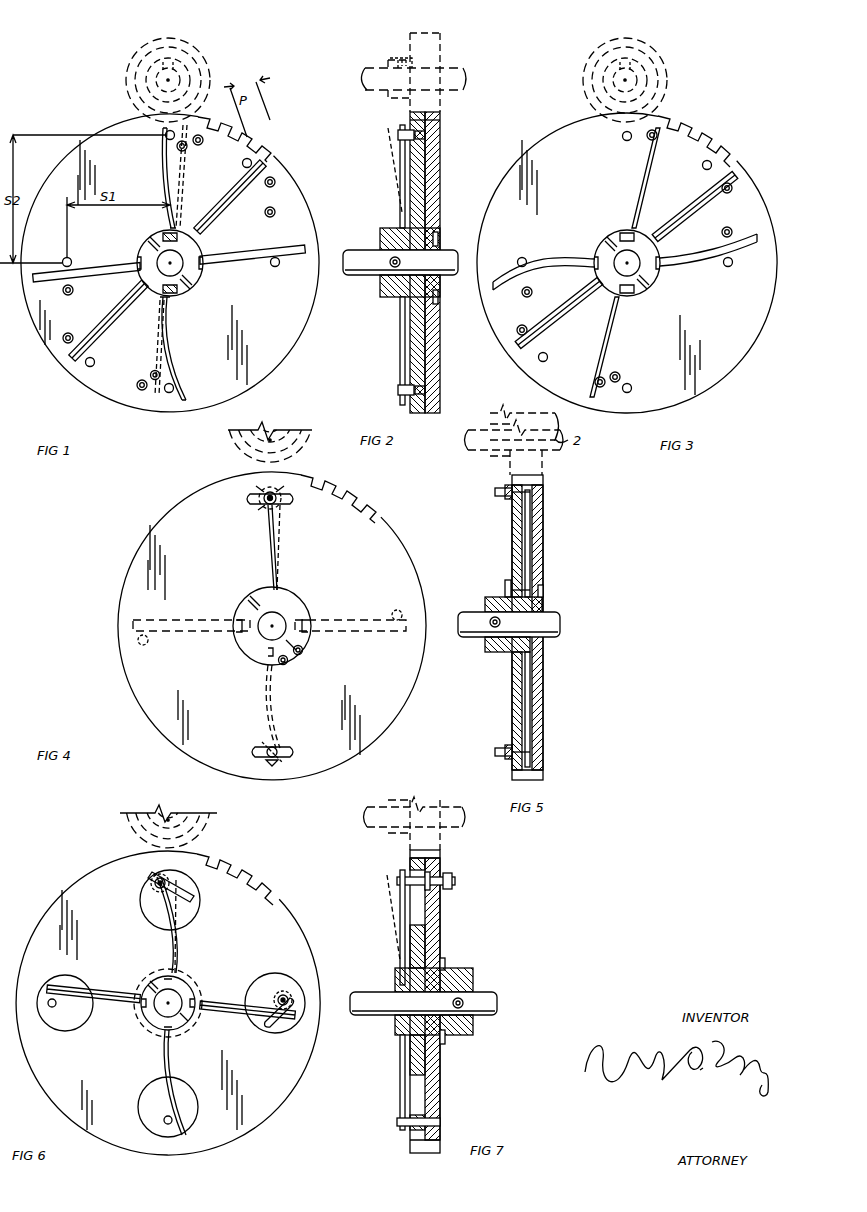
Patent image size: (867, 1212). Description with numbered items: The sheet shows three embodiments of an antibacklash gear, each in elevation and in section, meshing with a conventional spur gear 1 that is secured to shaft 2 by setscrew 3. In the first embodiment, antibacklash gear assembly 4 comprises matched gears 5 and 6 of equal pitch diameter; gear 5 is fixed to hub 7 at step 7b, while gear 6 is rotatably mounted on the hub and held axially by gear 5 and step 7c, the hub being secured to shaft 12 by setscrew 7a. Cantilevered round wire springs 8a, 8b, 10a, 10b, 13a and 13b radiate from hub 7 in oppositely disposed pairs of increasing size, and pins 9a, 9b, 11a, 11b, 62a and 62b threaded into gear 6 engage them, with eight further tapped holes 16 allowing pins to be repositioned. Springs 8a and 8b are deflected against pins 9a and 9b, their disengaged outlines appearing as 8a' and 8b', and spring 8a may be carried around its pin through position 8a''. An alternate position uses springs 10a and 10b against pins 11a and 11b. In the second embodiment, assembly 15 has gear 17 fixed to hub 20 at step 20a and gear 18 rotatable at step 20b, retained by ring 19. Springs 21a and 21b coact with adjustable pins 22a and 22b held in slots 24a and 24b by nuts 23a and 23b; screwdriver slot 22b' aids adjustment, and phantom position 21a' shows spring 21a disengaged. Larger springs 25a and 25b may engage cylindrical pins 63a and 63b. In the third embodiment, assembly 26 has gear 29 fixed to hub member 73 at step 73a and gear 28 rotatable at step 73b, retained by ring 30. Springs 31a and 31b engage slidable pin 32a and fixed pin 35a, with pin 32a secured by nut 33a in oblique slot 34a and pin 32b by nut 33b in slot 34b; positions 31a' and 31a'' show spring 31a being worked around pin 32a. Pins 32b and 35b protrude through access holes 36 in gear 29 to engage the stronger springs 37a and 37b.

In FIG. 1, the spur gear 1 is at (208, 52).
In FIG. 2, the spur gear 1 is at (442, 50).
In FIG. 3, the spur gear 1 is at (672, 40).
In FIG. 4, the spur gear 1 is at (314, 442).
In FIG. 5, the spur gear 1 is at (545, 471).
In FIG. 6, the spur gear 1 is at (212, 826).
In FIG. 7, the spur gear 1 is at (443, 852).
In FIG. 2, the shaft 2 is at (380, 68).
In FIG. 5, the shaft 2 is at (563, 441).
In FIG. 7, the shaft 2 is at (463, 823).
In FIG. 2, the setscrew 3 is at (401, 58).
In FIG. 1, the antibacklash gear assembly 4 is at (282, 208).
In FIG. 3, the antibacklash gear assembly 4 is at (750, 203).
In FIG. 2, the matched gear 5 is at (441, 157).
In FIG. 2, the matched gear 6 is at (441, 191).
In FIG. 1, the hub 7 is at (193, 282).
In FIG. 2, the hub 7 is at (380, 240).
In FIG. 1, the setscrew 7a is at (152, 243).
In FIG. 2, the setscrew 7a is at (392, 263).
In FIG. 4, the setscrew 7a is at (252, 613).
In FIG. 5, the setscrew 7a is at (502, 626).
In FIG. 6, the setscrew 7a is at (148, 985).
In FIG. 7, the setscrew 7a is at (452, 1003).
In FIG. 2, the step 7b is at (440, 238).
In FIG. 2, the step 7c is at (437, 301).
In FIG. 1, the cantilevered round wire spring 8a is at (157, 178).
In FIG. 2, the cantilevered round wire spring 8a is at (381, 176).
In FIG. 3, the cantilevered round wire spring 8a is at (656, 178).
In FIG. 1, the disengaged position of spring 8a 8a' is at (190, 176).
In FIG. 2, the deflected position of spring 8a 8a'' is at (371, 170).
In FIG. 1, the cantilevered round wire spring 8b is at (181, 348).
In FIG. 2, the cantilevered round wire spring 8b is at (388, 351).
In FIG. 3, the cantilevered round wire spring 8b is at (614, 347).
In FIG. 1, the disengaged position of spring 8b 8b' is at (146, 347).
In FIG. 1, the pin 9a is at (165, 134).
In FIG. 2, the pin 9a is at (400, 130).
In FIG. 3, the pin 9a is at (622, 136).
In FIG. 1, the pin 9b is at (168, 393).
In FIG. 2, the pin 9b is at (398, 391).
In FIG. 3, the pin 9b is at (632, 390).
In FIG. 1, the spring 10a is at (73, 283).
In FIG. 3, the spring 10a is at (530, 280).
In FIG. 1, the spring 10b is at (256, 257).
In FIG. 3, the spring 10b is at (675, 270).
In FIG. 1, the pin 11a is at (71, 258).
In FIG. 3, the pin 11a is at (526, 258).
In FIG. 1, the pin 11b is at (277, 266).
In FIG. 3, the pin 11b is at (730, 267).
In FIG. 2, the shaft 12 is at (378, 290).
In FIG. 5, the shaft 12 is at (478, 650).
In FIG. 7, the shaft 12 is at (385, 1020).
In FIG. 1, the spring 13a is at (100, 338).
In FIG. 3, the spring 13a is at (545, 336).
In FIG. 1, the spring 13b is at (222, 218).
In FIG. 3, the spring 13b is at (700, 215).
In FIG. 4, the antibacklash gear assembly 15 is at (374, 546).
In FIG. 1, the tapped holes 16 is at (274, 178).
In FIG. 3, the tapped holes 16 is at (734, 187).
In FIG. 5, the matched gear 17 is at (546, 543).
In FIG. 5, the matched gear 18 is at (513, 540).
In FIG. 4, the retaining ring 19 is at (289, 597).
In FIG. 5, the retaining ring 19 is at (505, 586).
In FIG. 5, the hub 20 is at (486, 603).
In FIG. 5, the step 20a is at (543, 600).
In FIG. 5, the step 20b is at (508, 584).
In FIG. 4, the cantilever spring 21a is at (249, 547).
In FIG. 5, the cantilever spring 21a is at (561, 543).
In FIG. 4, the disengaged position of spring 21a 21a' is at (303, 547).
In FIG. 4, the cantilever spring 21b is at (262, 712).
In FIG. 5, the cantilever spring 21b is at (531, 712).
In FIG. 4, the adjustable pin 22a is at (259, 502).
In FIG. 5, the adjustable pin 22a is at (496, 491).
In FIG. 5, the adjustable pin 22b is at (495, 748).
In FIG. 4, the screwdriver slot 22b' is at (293, 745).
In FIG. 4, the nut 23a is at (285, 503).
In FIG. 5, the nut 23a is at (501, 500).
In FIG. 4, the nut 23b is at (265, 750).
In FIG. 5, the nut 23b is at (500, 760).
In FIG. 4, the slot 24a is at (258, 490).
In FIG. 4, the slot 24b is at (258, 758).
In FIG. 4, the spring 25a is at (140, 620).
In FIG. 4, the spring 25b is at (328, 620).
In FIG. 6, the antibacklash gear assembly 26 is at (274, 921).
In FIG. 7, the matched gear 28 is at (441, 930).
In FIG. 7, the matched gear 29 is at (432, 955).
In FIG. 7, the retaining ring 30 is at (446, 966).
In FIG. 6, the spring 31a is at (142, 925).
In FIG. 7, the spring 31a is at (378, 920).
In FIG. 6, the alternate position of spring 31a 31a' is at (206, 926).
In FIG. 7, the alternate position of spring 31a 31a'' is at (370, 917).
In FIG. 6, the spring 31b is at (163, 1063).
In FIG. 7, the spring 31b is at (400, 1095).
In FIG. 6, the slidably adjustable pin 32a is at (165, 880).
In FIG. 7, the slidably adjustable pin 32a is at (455, 880).
In FIG. 6, the slidably adjustable pin 32b is at (300, 990).
In FIG. 6, the nut 33a is at (156, 878).
In FIG. 7, the nut 33a is at (444, 893).
In FIG. 6, the nut 33b is at (298, 1000).
In FIG. 6, the slot 34a is at (190, 887).
In FIG. 7, the slot 34a is at (432, 900).
In FIG. 6, the slot 34b is at (272, 1030).
In FIG. 6, the pin 35a is at (164, 1122).
In FIG. 6, the pin 35b is at (80, 978).
In FIG. 6, the access and lightening holes 36 is at (198, 1110).
In FIG. 6, the spring 37a is at (95, 1010).
In FIG. 6, the spring 37b is at (208, 1014).
In FIG. 1, the pin 62a is at (248, 158).
In FIG. 3, the pin 62a is at (706, 170).
In FIG. 1, the pin 62b is at (90, 367).
In FIG. 3, the pin 62b is at (546, 362).
In FIG. 4, the cylindrical pin 63a is at (147, 645).
In FIG. 4, the cylindrical pin 63b is at (398, 610).
In FIG. 7, the hub member 73 is at (474, 978).
In FIG. 7, the step 73a is at (410, 1050).
In FIG. 7, the step 73b is at (441, 1042).